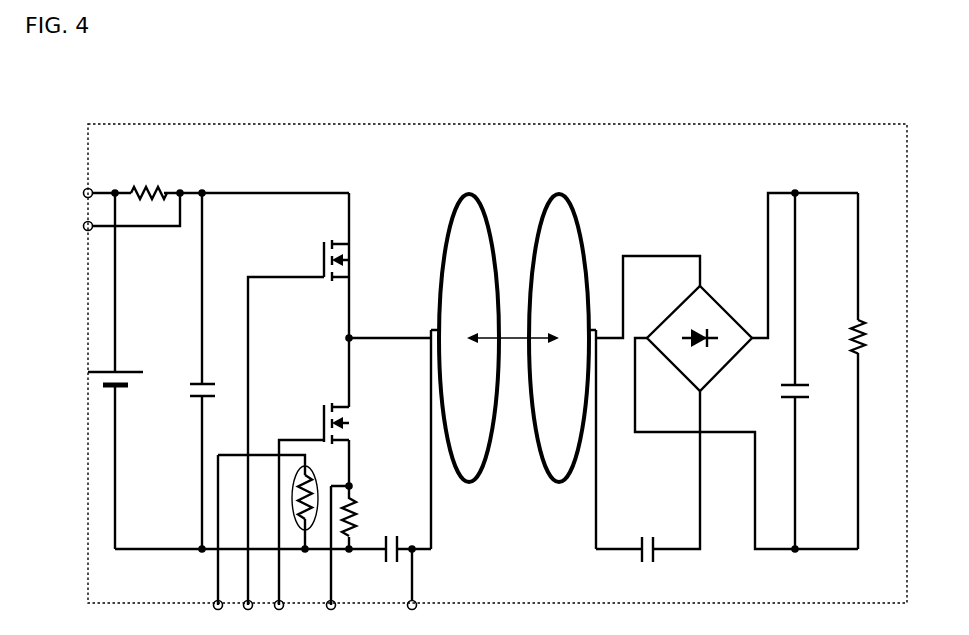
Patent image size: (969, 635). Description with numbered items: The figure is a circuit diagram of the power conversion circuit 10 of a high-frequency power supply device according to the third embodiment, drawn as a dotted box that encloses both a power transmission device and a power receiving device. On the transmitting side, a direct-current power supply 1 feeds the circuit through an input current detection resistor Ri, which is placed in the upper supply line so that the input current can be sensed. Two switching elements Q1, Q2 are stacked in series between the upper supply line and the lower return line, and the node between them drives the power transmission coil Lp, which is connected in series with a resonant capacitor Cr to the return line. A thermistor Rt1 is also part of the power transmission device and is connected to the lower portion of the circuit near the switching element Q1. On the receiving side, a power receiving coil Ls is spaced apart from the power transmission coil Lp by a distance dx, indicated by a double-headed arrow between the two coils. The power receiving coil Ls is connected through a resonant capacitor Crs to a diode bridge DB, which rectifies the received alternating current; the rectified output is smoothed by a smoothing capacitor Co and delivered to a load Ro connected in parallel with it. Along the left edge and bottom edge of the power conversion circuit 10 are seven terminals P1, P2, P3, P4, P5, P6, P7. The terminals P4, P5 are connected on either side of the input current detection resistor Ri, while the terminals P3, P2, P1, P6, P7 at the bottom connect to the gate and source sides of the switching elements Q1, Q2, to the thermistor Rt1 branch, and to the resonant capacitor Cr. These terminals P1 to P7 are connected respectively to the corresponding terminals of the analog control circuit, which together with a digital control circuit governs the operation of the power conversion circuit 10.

The power conversion circuit 10 is at (507, 123).
The direct-current power supply 1 is at (137, 387).
The input current detection resistor Ri is at (149, 177).
The switching element Q1 is at (317, 423).
The switching element Q2 is at (317, 260).
The thermistor Rt1 is at (317, 487).
The power transmission coil Lp is at (469, 319).
The power receiving coil Ls is at (559, 319).
The distance dx is at (513, 330).
The diode bridge DB is at (720, 310).
The smoothing capacitor Co is at (812, 391).
The load Ro is at (877, 337).
The resonant capacitor Cr is at (383, 563).
The resonant capacitor Crs is at (645, 567).
The terminal P1 is at (290, 618).
The terminal P2 is at (246, 618).
The terminal P3 is at (208, 618).
The terminal P4 is at (91, 193).
The terminal P5 is at (116, 216).
The terminal P6 is at (336, 618).
The terminal P7 is at (414, 592).